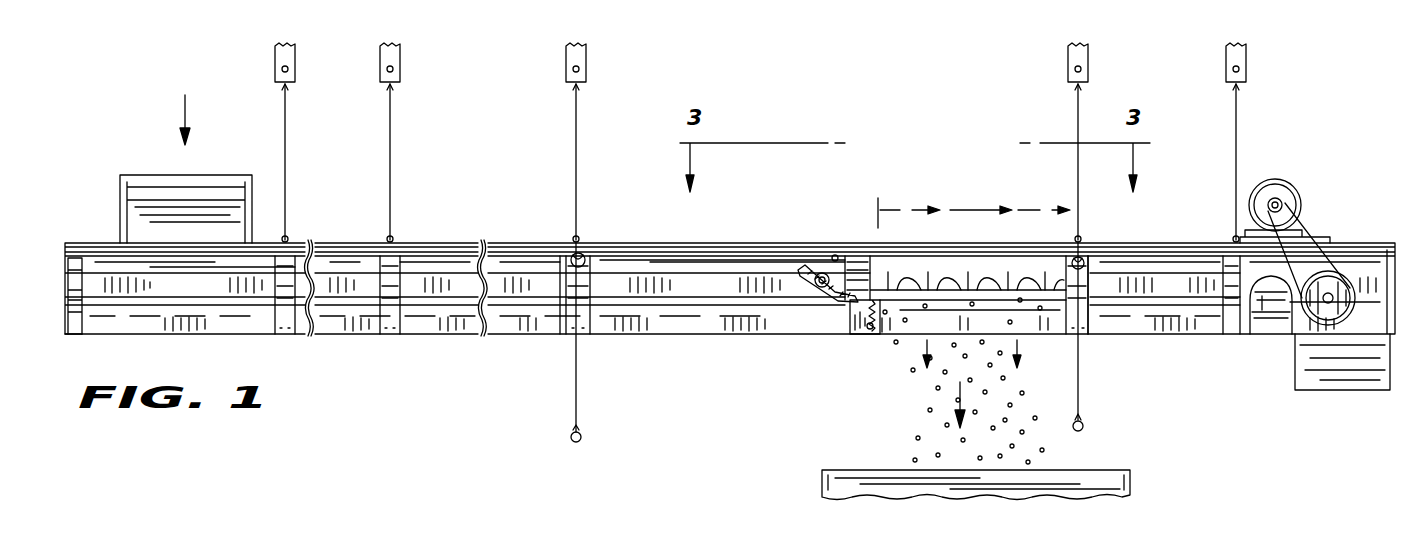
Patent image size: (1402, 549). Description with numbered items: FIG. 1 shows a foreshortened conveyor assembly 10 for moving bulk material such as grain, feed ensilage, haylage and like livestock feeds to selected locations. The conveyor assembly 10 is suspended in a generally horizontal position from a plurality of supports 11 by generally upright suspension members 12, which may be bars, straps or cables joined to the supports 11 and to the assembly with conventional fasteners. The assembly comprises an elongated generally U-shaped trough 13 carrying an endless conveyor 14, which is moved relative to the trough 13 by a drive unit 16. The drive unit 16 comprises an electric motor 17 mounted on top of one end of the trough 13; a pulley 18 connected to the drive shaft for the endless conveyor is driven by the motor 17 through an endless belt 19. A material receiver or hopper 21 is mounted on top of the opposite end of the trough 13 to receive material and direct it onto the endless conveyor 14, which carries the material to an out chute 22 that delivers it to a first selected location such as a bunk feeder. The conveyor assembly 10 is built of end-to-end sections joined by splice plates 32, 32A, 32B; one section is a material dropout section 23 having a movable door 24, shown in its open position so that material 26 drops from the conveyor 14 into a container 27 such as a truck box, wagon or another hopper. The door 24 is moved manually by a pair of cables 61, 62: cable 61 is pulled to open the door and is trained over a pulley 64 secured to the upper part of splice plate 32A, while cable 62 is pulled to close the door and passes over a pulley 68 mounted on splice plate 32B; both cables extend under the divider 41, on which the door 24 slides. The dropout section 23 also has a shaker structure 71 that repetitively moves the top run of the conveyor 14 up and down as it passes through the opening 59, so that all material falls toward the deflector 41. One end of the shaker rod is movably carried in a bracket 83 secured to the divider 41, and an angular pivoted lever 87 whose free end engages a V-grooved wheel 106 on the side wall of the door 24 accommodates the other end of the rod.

The conveyor assembly 10 is at (516, 198).
The supports 11 is at (380, 58).
The suspension members 12 is at (285, 152).
The trough 13 is at (444, 327).
The endless conveyor 14 is at (1032, 258).
The drive unit 16 is at (1318, 183).
The electric motor 17 is at (1280, 188).
The pulley 18 is at (1343, 262).
The endless belt 19 is at (1308, 222).
The hopper 21 is at (145, 187).
The out chute 22 is at (1360, 380).
The material dropout section 23 is at (745, 228).
The door 24 is at (672, 262).
The material 26 is at (925, 393).
The container 27 is at (835, 486).
The splice plate 32 is at (75, 336).
The splice plate 32A is at (563, 298).
The splice plate 32B is at (1090, 318).
The divider 41 is at (903, 360).
The opening 59 is at (942, 258).
The cable 61 is at (576, 398).
The cable 62 is at (1078, 398).
The pulley 64 is at (595, 250).
The pulley 68 is at (1090, 262).
The shaker structure 71 is at (812, 348).
The bracket 83 is at (895, 328).
The lever 87 is at (833, 280).
The wheel 106 is at (833, 256).